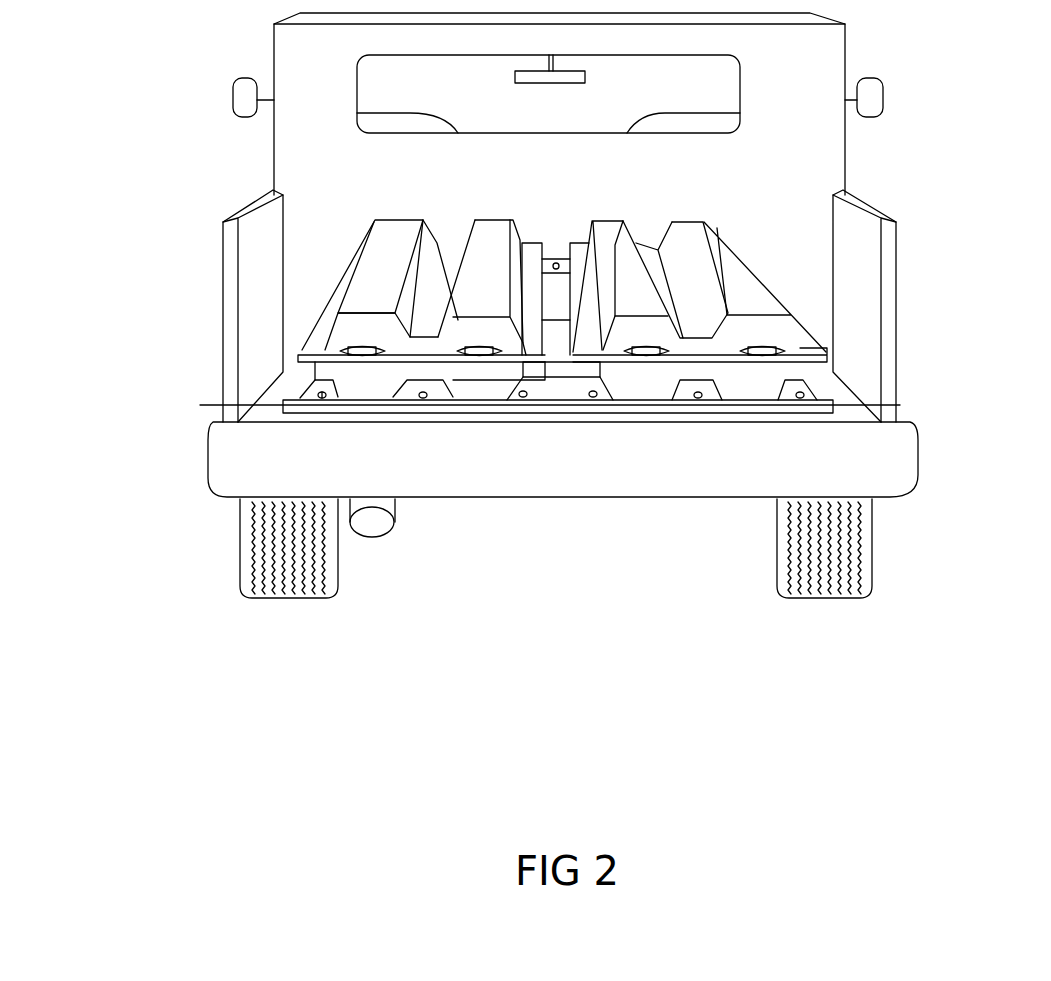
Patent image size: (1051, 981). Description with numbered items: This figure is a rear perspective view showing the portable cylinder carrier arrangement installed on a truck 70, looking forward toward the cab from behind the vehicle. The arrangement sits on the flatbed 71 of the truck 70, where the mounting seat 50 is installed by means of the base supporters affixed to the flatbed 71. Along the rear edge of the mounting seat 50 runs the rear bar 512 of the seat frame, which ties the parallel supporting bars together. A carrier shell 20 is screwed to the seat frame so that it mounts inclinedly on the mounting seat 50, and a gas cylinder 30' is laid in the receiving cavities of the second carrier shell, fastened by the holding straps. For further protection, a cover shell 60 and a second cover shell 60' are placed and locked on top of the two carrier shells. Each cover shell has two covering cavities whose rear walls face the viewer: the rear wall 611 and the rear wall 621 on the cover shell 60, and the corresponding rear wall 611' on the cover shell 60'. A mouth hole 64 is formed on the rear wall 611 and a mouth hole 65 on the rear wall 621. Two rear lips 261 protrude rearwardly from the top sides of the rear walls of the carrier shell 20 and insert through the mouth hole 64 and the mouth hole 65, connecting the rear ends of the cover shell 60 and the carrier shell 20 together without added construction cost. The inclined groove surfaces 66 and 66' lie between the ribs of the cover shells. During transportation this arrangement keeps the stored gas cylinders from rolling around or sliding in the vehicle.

The truck 70 is at (935, 198).
The flatbed 71 is at (857, 410).
The mounting seat 50 is at (302, 390).
The carrier shell 20 is at (767, 393).
The rear bar 512 is at (538, 405).
The gas cylinder 30' is at (430, 469).
The cover shell 60' is at (441, 263).
The cover shell 60 is at (700, 261).
The rear wall 611' is at (386, 248).
The rear wall 611 is at (749, 287).
The left inclined groove surface 66' is at (471, 246).
The right inclined groove surface 66 is at (699, 259).
The rear wall 621 is at (625, 331).
The mouth hole 65 is at (363, 345).
The mouth hole 64 is at (773, 346).
The rear lip 261 is at (433, 387).